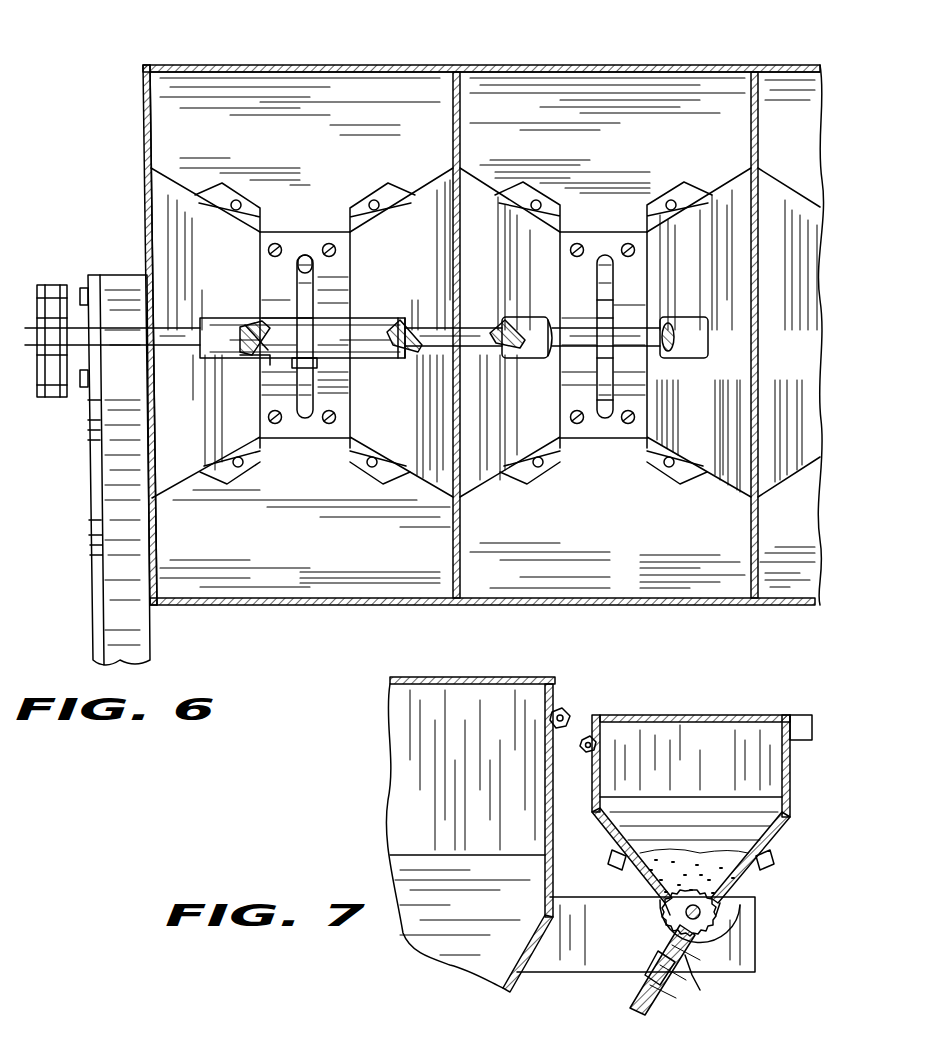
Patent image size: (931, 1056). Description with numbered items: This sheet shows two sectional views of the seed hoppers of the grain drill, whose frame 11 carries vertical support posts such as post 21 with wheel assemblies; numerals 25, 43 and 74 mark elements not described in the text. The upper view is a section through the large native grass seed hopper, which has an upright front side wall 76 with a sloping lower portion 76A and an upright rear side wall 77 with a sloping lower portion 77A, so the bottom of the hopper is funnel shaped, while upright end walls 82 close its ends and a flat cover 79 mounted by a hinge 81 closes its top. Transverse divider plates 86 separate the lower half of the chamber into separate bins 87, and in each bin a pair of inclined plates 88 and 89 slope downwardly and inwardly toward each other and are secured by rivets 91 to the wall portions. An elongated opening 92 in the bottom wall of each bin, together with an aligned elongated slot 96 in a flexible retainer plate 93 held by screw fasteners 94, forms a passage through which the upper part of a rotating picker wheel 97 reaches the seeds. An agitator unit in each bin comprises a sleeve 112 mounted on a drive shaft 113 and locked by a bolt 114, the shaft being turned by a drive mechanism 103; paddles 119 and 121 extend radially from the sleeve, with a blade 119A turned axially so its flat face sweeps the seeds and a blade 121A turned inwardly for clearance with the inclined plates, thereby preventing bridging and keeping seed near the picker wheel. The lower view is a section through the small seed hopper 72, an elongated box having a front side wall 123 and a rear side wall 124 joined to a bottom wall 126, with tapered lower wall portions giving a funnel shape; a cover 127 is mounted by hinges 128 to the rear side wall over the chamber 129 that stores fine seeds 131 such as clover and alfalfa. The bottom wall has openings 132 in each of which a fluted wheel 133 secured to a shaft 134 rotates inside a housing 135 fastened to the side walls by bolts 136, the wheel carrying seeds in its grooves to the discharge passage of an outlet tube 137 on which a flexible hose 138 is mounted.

In FIG. 7, the frame 11 is at (748, 952).
In FIG. 6, the vertical support post 21 is at (125, 280).
In FIG. 7, the frame member 25 is at (345, 1050).
In FIG. 7, the support 43 is at (122, 1050).
In FIG. 7, the second hopper 72 is at (792, 758).
In FIG. 7, the frame member 74 is at (278, 1055).
In FIG. 6, the front side wall 76 is at (235, 605).
In FIG. 7, the front side wall 76 is at (545, 797).
In FIG. 6, the lower portion of front side wall 76A is at (330, 575).
In FIG. 7, the lower portion of front side wall 76A is at (522, 948).
In FIG. 6, the rear side wall 77 is at (278, 62).
In FIG. 6, the lower portion of rear side wall 77A is at (378, 98).
In FIG. 7, the cover 79 is at (480, 677).
In FIG. 7, the hinge 81 is at (563, 712).
In FIG. 6, the end wall 82 is at (147, 85).
In FIG. 6, the divider plate 86 is at (460, 142).
In FIG. 6, the bin 87 is at (332, 474).
In FIG. 6, the inclined plate 88 is at (172, 478).
In FIG. 6, the inclined plate 89 is at (440, 463).
In FIG. 6, the rivet 91 is at (238, 200).
In FIG. 6, the elongated opening 92 is at (305, 255).
In FIG. 6, the flexible retainer plate 93 is at (628, 314).
In FIG. 6, the fastener 94 is at (275, 243).
In FIG. 6, the elongated slot 96 is at (292, 294).
In FIG. 6, the picker wheel 97 is at (613, 294).
In FIG. 6, the drive mechanism 103 is at (58, 270).
In FIG. 6, the sleeve 112 is at (340, 330).
In FIG. 6, the drive shaft 113 is at (174, 350).
In FIG. 6, the bolt 114 is at (320, 366).
In FIG. 6, the paddle 119 is at (248, 358).
In FIG. 6, the blade 119A is at (248, 330).
In FIG. 6, the paddle 121 is at (407, 357).
In FIG. 6, the blade 121A is at (398, 332).
In FIG. 7, the front side wall 123 is at (792, 805).
In FIG. 7, the rear side wall 124 is at (603, 795).
In FIG. 7, the bottom wall 126 is at (658, 907).
In FIG. 7, the cover 127 is at (748, 715).
In FIG. 7, the hinge 128 is at (590, 740).
In FIG. 7, the chamber 129 is at (746, 780).
In FIG. 7, the seeds 131 is at (720, 824).
In FIG. 7, the opening 132 is at (715, 905).
In FIG. 7, the fluted wheel 133 is at (697, 967).
In FIG. 7, the shaft 134 is at (700, 918).
In FIG. 7, the housing 135 is at (735, 957).
In FIG. 7, the bolt 136 is at (768, 882).
In FIG. 7, the outlet tube 137 is at (655, 957).
In FIG. 7, the flexible hose 138 is at (650, 1012).